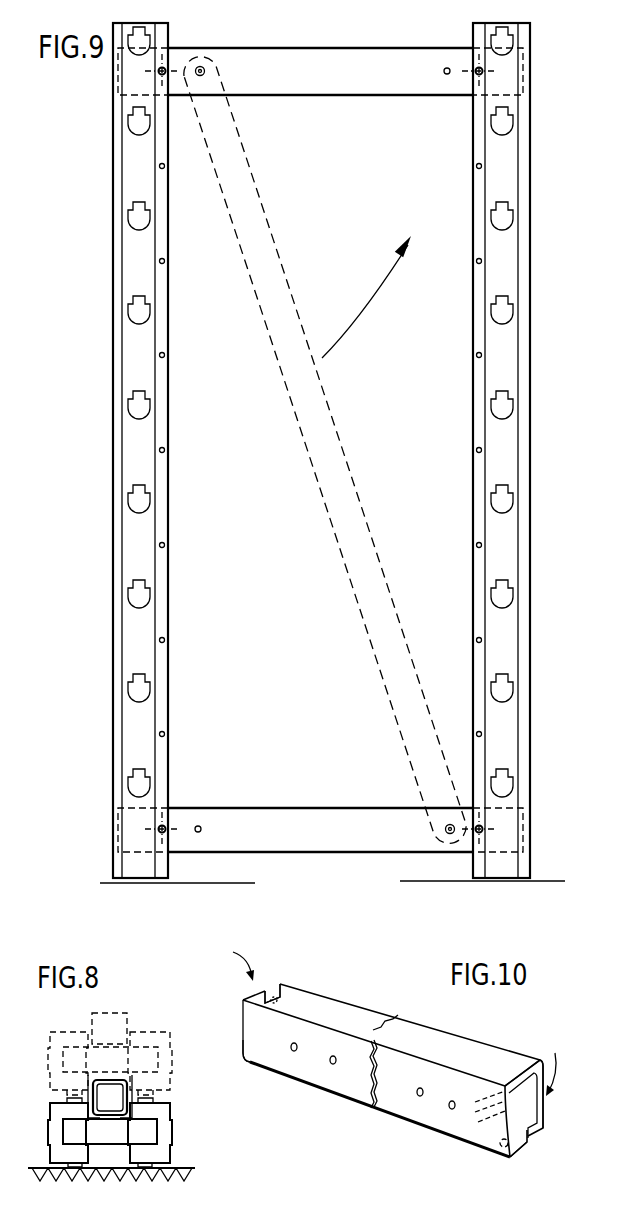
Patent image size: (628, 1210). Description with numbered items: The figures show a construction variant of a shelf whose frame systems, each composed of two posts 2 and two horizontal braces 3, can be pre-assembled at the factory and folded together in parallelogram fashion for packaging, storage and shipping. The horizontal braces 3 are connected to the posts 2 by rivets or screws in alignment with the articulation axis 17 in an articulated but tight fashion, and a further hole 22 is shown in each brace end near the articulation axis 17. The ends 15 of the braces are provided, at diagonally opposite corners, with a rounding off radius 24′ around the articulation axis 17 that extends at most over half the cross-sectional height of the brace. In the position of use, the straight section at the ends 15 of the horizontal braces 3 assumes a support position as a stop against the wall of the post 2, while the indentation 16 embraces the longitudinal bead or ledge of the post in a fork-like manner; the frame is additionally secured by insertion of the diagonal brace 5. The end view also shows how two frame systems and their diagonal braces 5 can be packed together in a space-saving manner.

In FIG. 9, the post 2 is at (131, 266).
In FIG. 8, the post 2 is at (50, 1076).
In FIG. 9, the horizontal brace 3 is at (350, 96).
In FIG. 8, the horizontal brace 3 is at (72, 1128).
In FIG. 10, the horizontal brace 3 is at (420, 1037).
In FIG. 9, the diagonal brace 5 is at (344, 468).
In FIG. 8, the diagonal brace 5 is at (116, 1016).
In FIG. 10, the end of horizontal brace 15 is at (386, 1014).
In FIG. 10, the indentation 16 is at (268, 987).
In FIG. 9, the articulation axis 17 is at (166, 70).
In FIG. 10, the articulation axis 17 is at (294, 1052).
In FIG. 9, the bolt hole 22 is at (206, 67).
In FIG. 10, the bolt hole 22 is at (333, 1065).
In FIG. 9, the rounding off radius 24′ is at (119, 82).
In FIG. 10, the rounding off radius 24′ is at (250, 1064).